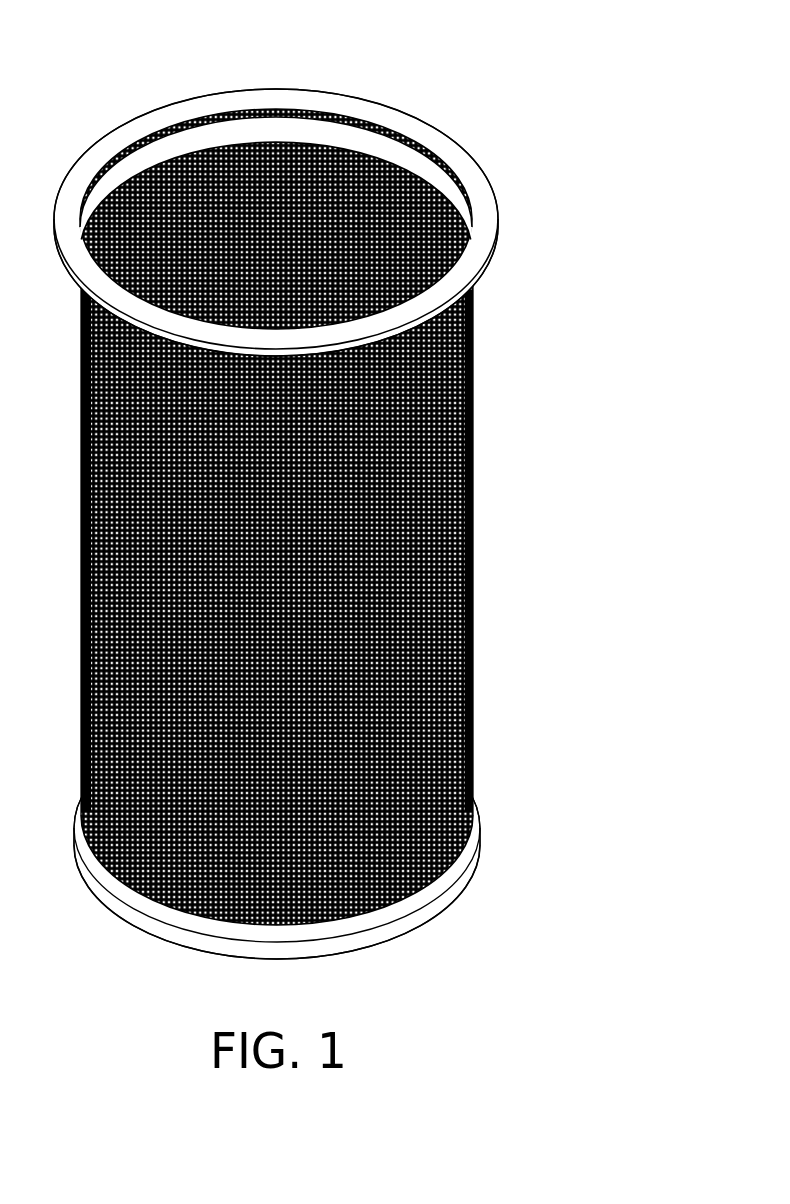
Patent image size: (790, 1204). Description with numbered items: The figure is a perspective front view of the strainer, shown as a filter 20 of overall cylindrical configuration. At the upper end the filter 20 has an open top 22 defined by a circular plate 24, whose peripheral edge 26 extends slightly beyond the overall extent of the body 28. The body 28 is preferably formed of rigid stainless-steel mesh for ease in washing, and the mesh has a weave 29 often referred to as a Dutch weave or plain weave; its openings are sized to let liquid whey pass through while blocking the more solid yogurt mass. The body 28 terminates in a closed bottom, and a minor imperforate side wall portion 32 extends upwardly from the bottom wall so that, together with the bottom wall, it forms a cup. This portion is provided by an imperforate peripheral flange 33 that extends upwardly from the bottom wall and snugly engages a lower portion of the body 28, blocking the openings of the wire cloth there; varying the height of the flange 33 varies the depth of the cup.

The filter 20 is at (380, 605).
The open top 22 is at (305, 194).
The circular plate 24 is at (480, 168).
The peripheral edge 26 is at (495, 240).
The body 28 is at (492, 548).
The weave 29 is at (438, 668).
The minor imperforate side wall portion 32 is at (432, 907).
The imperforate peripheral flange 33 is at (354, 902).